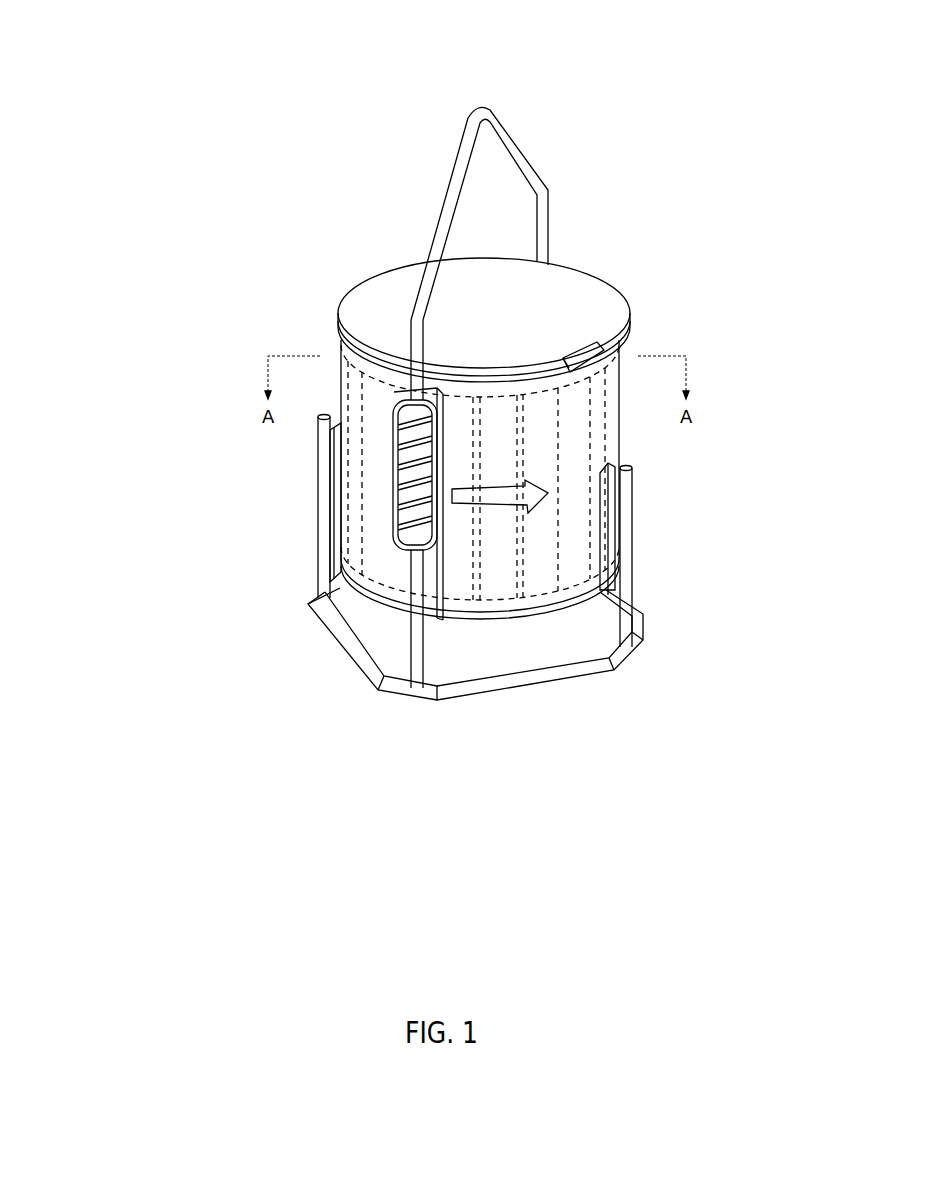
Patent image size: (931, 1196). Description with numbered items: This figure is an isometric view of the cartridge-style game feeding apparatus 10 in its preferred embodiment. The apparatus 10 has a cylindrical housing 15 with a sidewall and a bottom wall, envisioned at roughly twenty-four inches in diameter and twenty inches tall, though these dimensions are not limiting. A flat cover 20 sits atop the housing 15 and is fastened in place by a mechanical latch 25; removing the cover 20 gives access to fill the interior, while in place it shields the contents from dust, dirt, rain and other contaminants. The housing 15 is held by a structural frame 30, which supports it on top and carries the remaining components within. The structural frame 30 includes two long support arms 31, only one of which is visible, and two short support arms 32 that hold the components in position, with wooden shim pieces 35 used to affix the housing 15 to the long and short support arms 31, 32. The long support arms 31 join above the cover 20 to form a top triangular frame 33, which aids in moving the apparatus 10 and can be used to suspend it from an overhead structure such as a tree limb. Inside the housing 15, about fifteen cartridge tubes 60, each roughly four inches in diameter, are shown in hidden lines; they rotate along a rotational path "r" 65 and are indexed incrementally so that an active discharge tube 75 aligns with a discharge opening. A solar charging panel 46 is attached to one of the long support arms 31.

The cartridge-style game feeding apparatus 10 is at (212, 787).
The housing 15 is at (632, 432).
The flat cover 20 is at (541, 300).
The mechanical latch 25 is at (592, 360).
The structural frame 30 is at (538, 680).
The long support arms 31 is at (408, 648).
The short support arms 32 is at (318, 548).
The top triangular frame 33 is at (488, 106).
The shim pieces 35 is at (330, 510).
The solar charging panel 46 is at (400, 548).
The cartridge tubes 60 is at (505, 410).
The rotational path 65 is at (552, 494).
The active discharge tube 75 is at (340, 390).